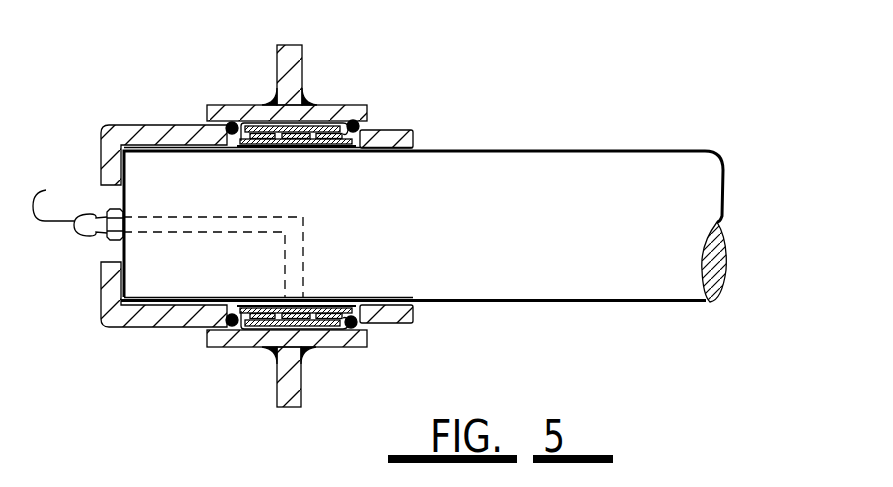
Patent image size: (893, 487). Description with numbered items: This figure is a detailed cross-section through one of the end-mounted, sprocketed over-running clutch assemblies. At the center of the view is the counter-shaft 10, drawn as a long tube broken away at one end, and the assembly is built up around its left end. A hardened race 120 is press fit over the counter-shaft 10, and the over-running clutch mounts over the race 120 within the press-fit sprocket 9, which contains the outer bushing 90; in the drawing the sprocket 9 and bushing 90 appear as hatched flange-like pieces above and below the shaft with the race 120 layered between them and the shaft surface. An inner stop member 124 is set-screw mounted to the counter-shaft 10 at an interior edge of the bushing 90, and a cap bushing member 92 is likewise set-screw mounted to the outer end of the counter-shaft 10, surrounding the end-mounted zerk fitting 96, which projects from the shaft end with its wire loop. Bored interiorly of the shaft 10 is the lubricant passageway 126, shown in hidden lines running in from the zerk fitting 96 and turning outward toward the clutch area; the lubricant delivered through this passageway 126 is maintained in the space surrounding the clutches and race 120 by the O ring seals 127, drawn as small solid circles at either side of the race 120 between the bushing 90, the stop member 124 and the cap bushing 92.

The sprocket 9 is at (293, 58).
The counter-shaft 10 is at (514, 240).
The outer bushing 90 is at (325, 110).
The cap bushing member 92 is at (170, 316).
The zerk fitting 96 is at (78, 205).
The hardened race 120 is at (298, 147).
The inner stop member 124 is at (418, 132).
The lubricant passageway 126 is at (296, 248).
The O ring seals 127 is at (372, 123).